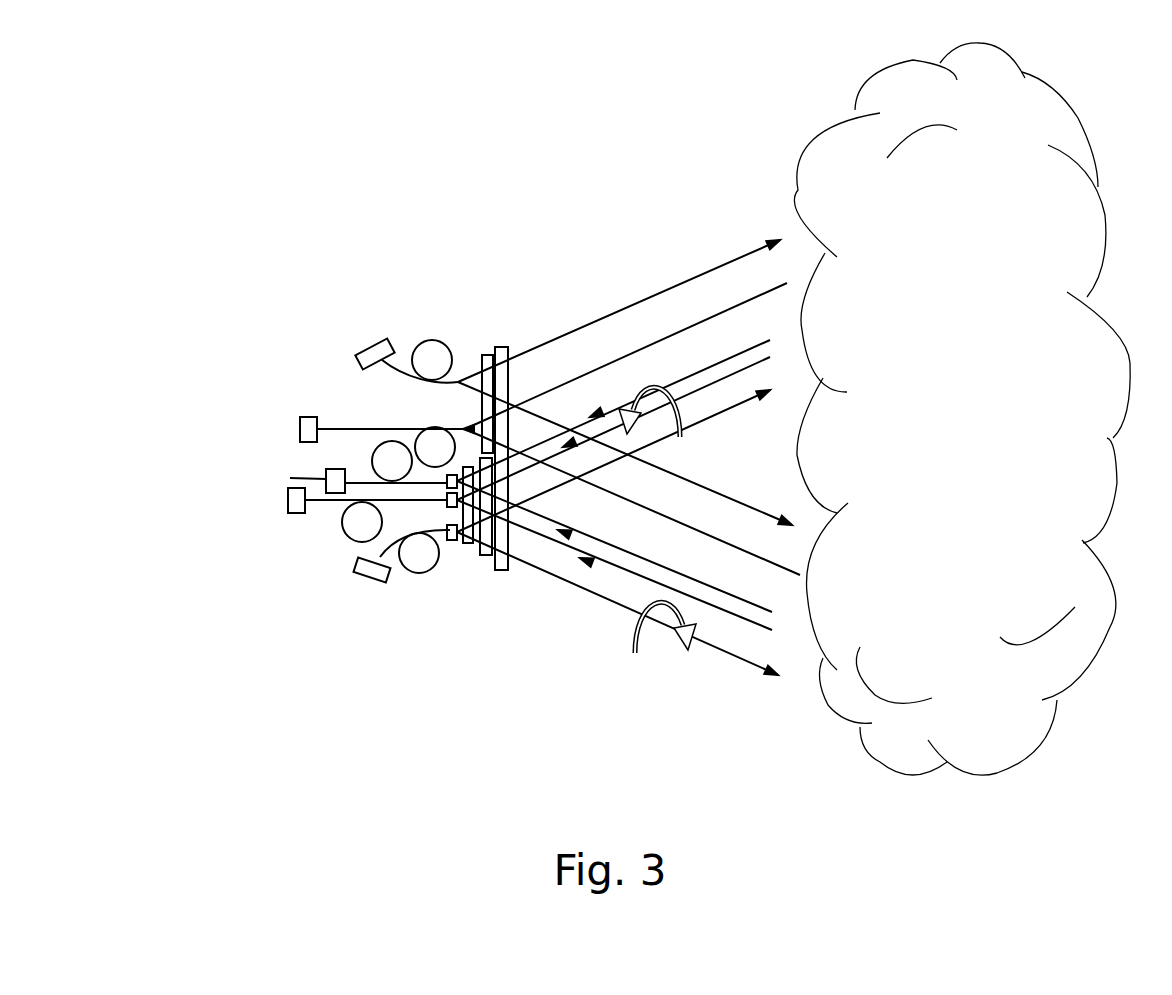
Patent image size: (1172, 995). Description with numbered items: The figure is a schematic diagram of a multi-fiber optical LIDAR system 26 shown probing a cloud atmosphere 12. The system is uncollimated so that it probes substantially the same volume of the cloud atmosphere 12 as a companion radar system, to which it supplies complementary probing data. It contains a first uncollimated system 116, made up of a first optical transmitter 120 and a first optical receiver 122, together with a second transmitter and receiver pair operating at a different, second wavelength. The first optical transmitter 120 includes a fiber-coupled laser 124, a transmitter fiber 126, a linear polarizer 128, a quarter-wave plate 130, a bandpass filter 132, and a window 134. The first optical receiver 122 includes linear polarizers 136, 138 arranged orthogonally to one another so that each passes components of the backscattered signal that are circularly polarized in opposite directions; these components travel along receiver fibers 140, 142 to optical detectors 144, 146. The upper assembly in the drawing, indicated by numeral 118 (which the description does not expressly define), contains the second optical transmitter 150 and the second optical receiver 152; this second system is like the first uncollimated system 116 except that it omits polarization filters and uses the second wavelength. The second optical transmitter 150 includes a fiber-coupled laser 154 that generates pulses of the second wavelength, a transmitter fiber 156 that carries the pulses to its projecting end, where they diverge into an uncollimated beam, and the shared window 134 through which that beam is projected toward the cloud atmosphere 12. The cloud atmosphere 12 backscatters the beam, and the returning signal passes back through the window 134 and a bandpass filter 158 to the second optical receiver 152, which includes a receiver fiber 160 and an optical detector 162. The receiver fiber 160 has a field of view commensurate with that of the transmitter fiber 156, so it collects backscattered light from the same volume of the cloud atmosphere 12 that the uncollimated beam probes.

The cloud atmosphere 12 is at (975, 339).
The multi-fiber optical LIDAR system 26 is at (467, 190).
The first uncollimated system 116 is at (362, 609).
The upper light source assembly 118 is at (362, 294).
The first optical transmitter 120 is at (311, 536).
The first optical receiver 122 is at (280, 507).
The fiber-coupled laser 124 is at (382, 582).
The transmitter fiber 126 is at (423, 573).
The linear polarizer 128 is at (450, 543).
The quarter-wave plate 130 is at (470, 547).
The bandpass filter 132 is at (490, 556).
The window 134 is at (502, 347).
The linear polarizer 136 is at (415, 460).
The linear polarizer 138 is at (445, 505).
The receiver fiber 140 is at (368, 478).
The receiver fiber 142 is at (342, 523).
The optical detector 144 is at (290, 478).
The optical detector 146 is at (287, 495).
The second optical transmitter 150 is at (362, 325).
The second optical receiver 152 is at (331, 409).
The fiber-coupled laser 154 is at (380, 337).
The transmitter fiber 156 is at (432, 340).
The bandpass filter 158 is at (493, 378).
The receiver fiber 160 is at (392, 428).
The optical detector 162 is at (313, 417).